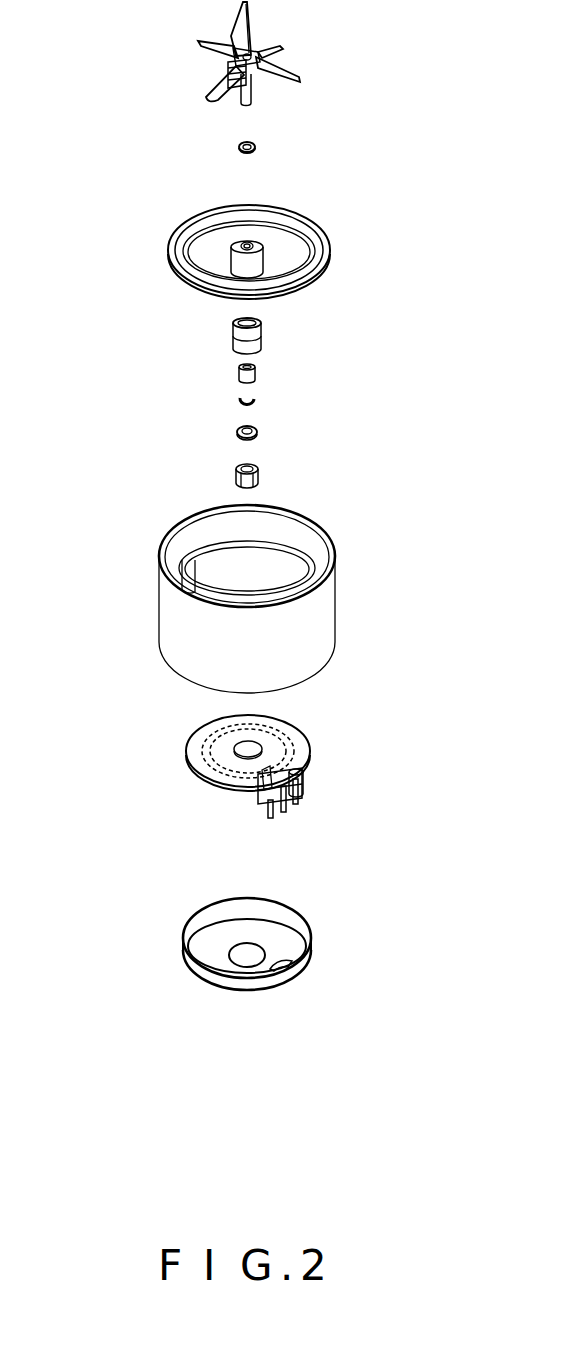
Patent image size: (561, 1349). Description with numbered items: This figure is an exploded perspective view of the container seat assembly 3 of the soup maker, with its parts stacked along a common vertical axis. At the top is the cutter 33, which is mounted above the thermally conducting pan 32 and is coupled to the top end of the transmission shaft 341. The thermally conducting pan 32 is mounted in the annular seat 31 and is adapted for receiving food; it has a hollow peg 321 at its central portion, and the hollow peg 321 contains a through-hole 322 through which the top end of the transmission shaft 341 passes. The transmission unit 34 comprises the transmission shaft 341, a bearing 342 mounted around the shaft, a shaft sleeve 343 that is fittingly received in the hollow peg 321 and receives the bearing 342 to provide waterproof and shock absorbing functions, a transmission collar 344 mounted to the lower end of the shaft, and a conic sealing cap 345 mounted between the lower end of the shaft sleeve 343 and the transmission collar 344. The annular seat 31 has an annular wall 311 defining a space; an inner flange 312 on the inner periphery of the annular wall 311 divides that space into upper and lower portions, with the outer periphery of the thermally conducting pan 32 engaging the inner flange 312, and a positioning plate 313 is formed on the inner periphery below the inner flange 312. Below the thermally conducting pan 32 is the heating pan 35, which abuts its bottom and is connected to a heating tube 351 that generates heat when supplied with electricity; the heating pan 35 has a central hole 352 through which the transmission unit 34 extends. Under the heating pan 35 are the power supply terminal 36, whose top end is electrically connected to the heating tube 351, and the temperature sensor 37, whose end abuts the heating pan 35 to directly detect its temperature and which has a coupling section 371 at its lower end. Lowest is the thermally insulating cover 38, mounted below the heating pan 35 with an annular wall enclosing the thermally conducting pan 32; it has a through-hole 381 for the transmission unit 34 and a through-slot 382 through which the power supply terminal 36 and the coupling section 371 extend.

The container seat assembly 3 is at (403, 615).
The annular seat 31 is at (251, 586).
The annular wall 311 is at (285, 532).
The inner flange 312 is at (302, 562).
The positioning plate 313 is at (177, 577).
The thermally conducting pan 32 is at (320, 233).
The hollow peg 321 is at (263, 262).
The through-hole 322 is at (250, 248).
The cutter 33 is at (308, 52).
The transmission shaft 341 is at (250, 88).
The transmission unit 34 is at (337, 390).
The bearing 342 is at (257, 372).
The shaft sleeve 343 is at (262, 340).
The transmission collar 344 is at (258, 473).
The conic sealing cap 345 is at (258, 432).
The heating pan 35 is at (251, 734).
The heating tube 351 is at (203, 742).
The hole 352 is at (250, 748).
The power supply terminal 36 is at (297, 798).
The temperature sensor 37 is at (255, 785).
The coupling section 371 is at (298, 800).
The thermally insulating cover 38 is at (328, 935).
The through-hole 381 is at (250, 952).
The through-slot 382 is at (288, 962).